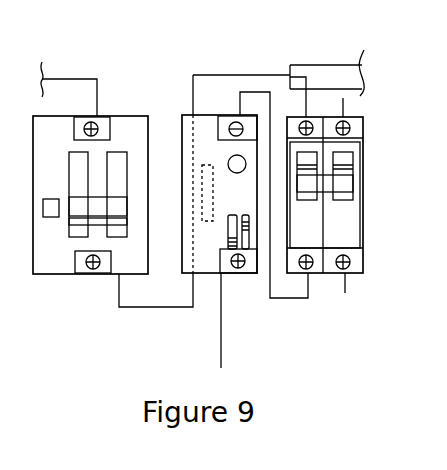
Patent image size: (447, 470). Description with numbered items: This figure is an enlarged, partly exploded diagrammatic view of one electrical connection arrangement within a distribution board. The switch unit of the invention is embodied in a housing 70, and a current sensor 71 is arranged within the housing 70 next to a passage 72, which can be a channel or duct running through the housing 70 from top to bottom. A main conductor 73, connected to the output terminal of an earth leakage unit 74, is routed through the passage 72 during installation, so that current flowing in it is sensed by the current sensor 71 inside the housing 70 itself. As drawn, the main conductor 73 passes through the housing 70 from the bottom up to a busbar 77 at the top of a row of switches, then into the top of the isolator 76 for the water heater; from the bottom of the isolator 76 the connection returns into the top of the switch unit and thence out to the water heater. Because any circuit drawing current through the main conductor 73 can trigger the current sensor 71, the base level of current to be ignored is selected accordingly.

The housing 70 is at (213, 247).
The current sensor 71 is at (210, 167).
The passage 72 is at (235, 148).
The main conductor 73 is at (150, 309).
The earth leakage unit 74 is at (122, 137).
The isolator 76 is at (313, 227).
The busbar 77 is at (330, 65).